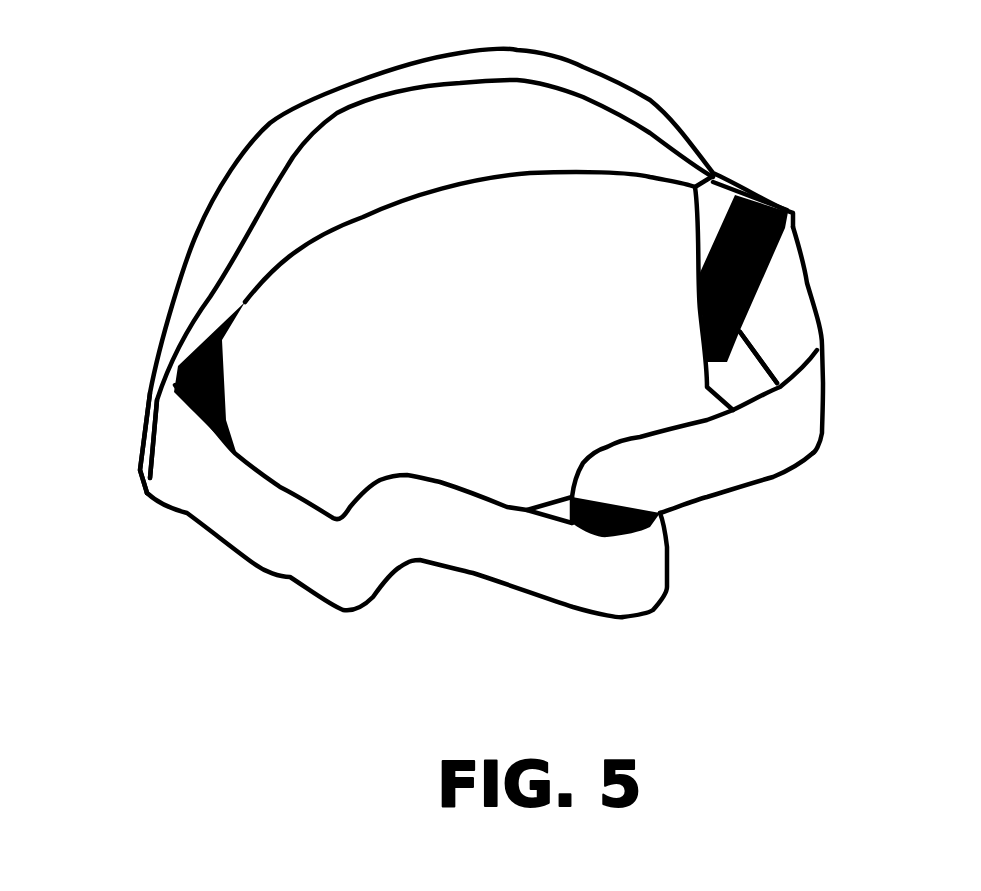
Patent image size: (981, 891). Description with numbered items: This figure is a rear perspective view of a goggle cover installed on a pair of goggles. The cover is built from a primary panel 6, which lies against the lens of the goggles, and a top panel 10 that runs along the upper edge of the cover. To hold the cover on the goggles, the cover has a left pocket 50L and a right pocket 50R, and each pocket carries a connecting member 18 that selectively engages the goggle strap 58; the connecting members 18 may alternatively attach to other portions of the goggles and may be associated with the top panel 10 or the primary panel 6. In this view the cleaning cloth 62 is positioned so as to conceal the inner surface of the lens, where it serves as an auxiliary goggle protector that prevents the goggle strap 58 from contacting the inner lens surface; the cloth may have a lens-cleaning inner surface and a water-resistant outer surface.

The primary panel 6 is at (533, 60).
The top panel 10 is at (617, 150).
The cleaning cloth 62 is at (465, 377).
The right pocket 50R is at (777, 200).
The left pocket 50L is at (153, 397).
The connecting member 18 is at (743, 267).
The goggle strap 58 is at (297, 557).